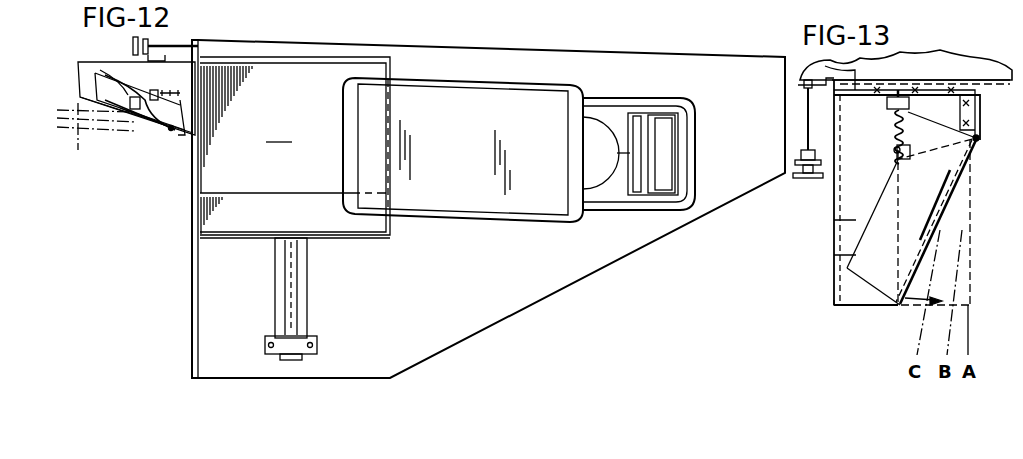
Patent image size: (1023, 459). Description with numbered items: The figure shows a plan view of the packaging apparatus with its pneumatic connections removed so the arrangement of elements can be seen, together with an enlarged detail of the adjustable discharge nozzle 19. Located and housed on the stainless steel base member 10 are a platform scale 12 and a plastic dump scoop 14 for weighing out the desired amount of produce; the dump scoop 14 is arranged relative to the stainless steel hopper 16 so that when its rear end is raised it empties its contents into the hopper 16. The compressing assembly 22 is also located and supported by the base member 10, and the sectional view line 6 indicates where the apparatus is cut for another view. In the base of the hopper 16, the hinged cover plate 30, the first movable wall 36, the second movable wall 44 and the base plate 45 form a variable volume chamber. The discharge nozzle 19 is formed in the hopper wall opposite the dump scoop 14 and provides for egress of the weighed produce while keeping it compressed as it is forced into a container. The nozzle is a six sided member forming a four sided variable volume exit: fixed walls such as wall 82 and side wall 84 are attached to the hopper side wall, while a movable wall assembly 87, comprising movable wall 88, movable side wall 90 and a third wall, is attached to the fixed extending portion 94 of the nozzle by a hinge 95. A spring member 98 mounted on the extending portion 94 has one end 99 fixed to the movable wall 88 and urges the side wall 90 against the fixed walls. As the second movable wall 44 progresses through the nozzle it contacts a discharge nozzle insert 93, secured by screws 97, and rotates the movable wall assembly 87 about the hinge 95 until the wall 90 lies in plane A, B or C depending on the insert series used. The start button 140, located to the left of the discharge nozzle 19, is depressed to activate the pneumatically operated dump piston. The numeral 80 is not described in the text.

In FIG. 12, the section line 6 is at (458, 10).
In FIG. 12, the base member 10 is at (540, 283).
In FIG. 12, the platform scale 12 is at (660, 115).
In FIG. 12, the dump scoop 14 is at (495, 97).
In FIG. 12, the hopper 16 is at (195, 207).
In FIG. 12, the discharge nozzle 19 is at (78, 82).
In FIG. 13, the discharge nozzle 19 is at (830, 298).
In FIG. 12, the compressing assembly 22 is at (283, 310).
In FIG. 12, the hinged cover plate 30 is at (327, 223).
In FIG. 12, the first movable wall 36 is at (532, 9).
In FIG. 12, the second movable wall 44 is at (105, 87).
In FIG. 12, the base plate 45 is at (279, 131).
In FIG. 12, the wall 80 is at (728, 11).
In FIG. 13, the fixed wall 82 is at (838, 275).
In FIG. 13, the fixed side wall 84 is at (838, 245).
In FIG. 13, the movable wall assembly 87 is at (935, 237).
In FIG. 13, the movable wall 88 is at (883, 275).
In FIG. 12, the movable side wall 90 is at (125, 115).
In FIG. 13, the movable side wall 90 is at (950, 208).
In FIG. 12, the discharge nozzle insert 93 is at (152, 118).
In FIG. 13, the fixed extending portion 94 is at (978, 100).
In FIG. 12, the hinge 95 is at (172, 130).
In FIG. 13, the hinge 95 is at (980, 139).
In FIG. 12, the screws 97 is at (185, 137).
In FIG. 13, the spring member 98 is at (890, 130).
In FIG. 13, the spring end 99 is at (905, 160).
In FIG. 12, the start button 140 is at (134, 44).
In FIG. 13, the start button 140 is at (808, 180).